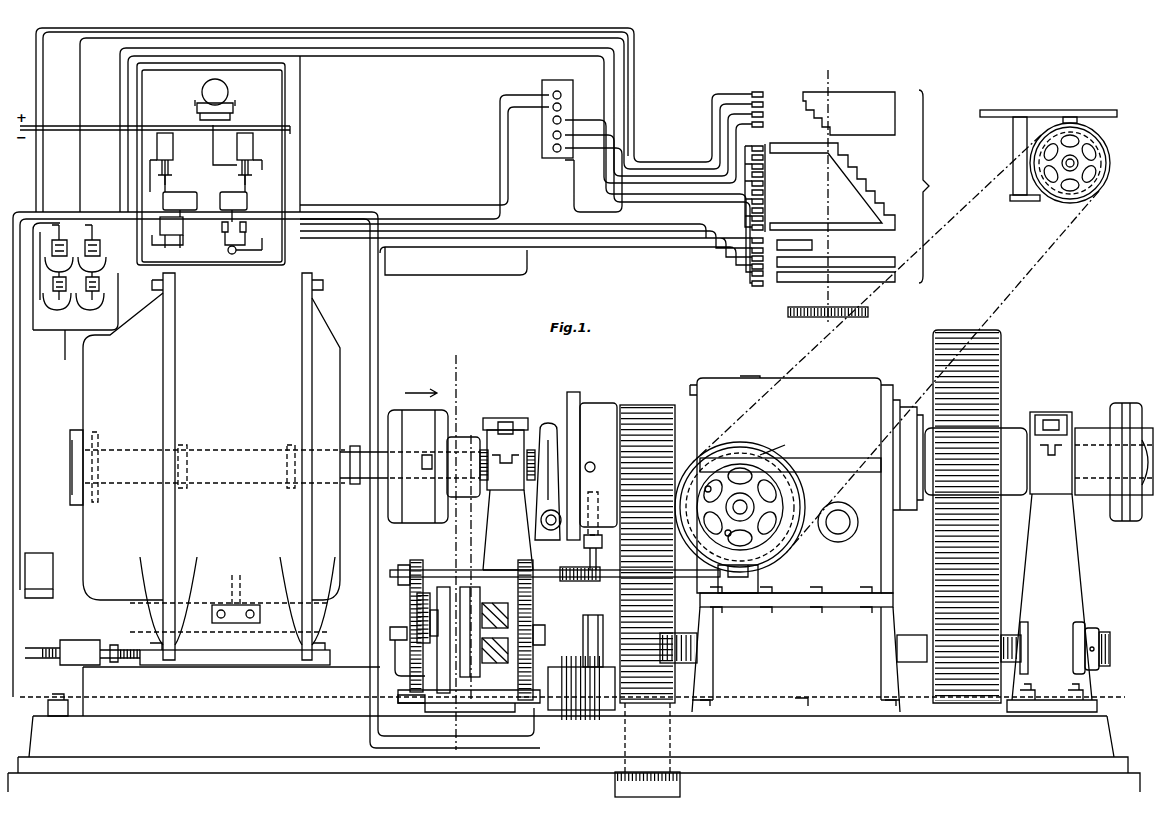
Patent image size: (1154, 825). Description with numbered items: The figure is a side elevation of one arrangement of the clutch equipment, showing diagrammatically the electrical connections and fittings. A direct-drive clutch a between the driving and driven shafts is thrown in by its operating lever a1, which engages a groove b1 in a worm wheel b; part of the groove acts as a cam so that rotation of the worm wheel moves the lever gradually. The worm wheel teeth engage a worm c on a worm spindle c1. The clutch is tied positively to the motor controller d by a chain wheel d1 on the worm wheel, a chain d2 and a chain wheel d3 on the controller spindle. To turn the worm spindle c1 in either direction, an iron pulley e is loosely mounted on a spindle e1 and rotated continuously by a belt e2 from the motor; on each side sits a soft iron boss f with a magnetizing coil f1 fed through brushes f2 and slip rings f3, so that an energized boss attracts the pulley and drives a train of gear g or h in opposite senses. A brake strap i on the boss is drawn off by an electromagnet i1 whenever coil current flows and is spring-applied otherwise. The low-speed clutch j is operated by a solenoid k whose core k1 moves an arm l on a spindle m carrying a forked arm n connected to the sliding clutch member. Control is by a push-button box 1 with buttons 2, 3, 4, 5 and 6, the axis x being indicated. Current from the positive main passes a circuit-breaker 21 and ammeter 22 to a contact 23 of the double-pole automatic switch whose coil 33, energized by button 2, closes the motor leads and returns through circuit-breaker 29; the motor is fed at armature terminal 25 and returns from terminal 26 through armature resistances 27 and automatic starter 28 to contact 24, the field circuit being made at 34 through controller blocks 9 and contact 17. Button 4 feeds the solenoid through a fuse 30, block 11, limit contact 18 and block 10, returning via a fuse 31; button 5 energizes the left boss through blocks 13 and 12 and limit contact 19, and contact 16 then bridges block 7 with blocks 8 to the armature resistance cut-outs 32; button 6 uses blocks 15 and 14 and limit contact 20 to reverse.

The push-button box 1 is at (573, 98).
The start button 2 is at (562, 91).
The stop button 3 is at (562, 104).
The low-speed clutch button 4 is at (562, 117).
The left-hand boss button 5 is at (552, 133).
The right-hand boss button 6 is at (552, 146).
The fixed contact block 7 is at (763, 95).
The fixed contact blocks 8 is at (763, 115).
The controller contact blocks 9 is at (766, 188).
The fixed contact block 10 is at (767, 240).
The fixed contact block 11 is at (749, 250).
The fixed contact block 12 is at (767, 257).
The fixed contact block 13 is at (749, 266).
The fixed contact block 14 is at (767, 273).
The fixed contact block 15 is at (749, 284).
The controller contact 16 is at (849, 113).
The controller contact 17 is at (805, 141).
The limit contact 18 is at (812, 245).
The limit contact 19 is at (895, 262).
The limit contact 20 is at (895, 277).
The circuit-breaker 21 is at (243, 155).
The ammeter 22 is at (222, 110).
The contact 23 is at (247, 245).
The contact 24 is at (224, 226).
The motor armature terminal 25 is at (250, 618).
The motor armature terminal 26 is at (221, 618).
The armature resistances 27 is at (90, 296).
The automatic starter 28 is at (167, 232).
The circuit-breaker 29 is at (172, 162).
The fuses 30 is at (233, 191).
The fuses 31 is at (180, 188).
The armature resistance cut-outs 32 is at (66, 248).
The operating coil 33 is at (232, 254).
The field circuit connection 34 is at (236, 588).
The clutch a is at (832, 378).
The operating lever a1 is at (828, 540).
The worm wheel b is at (768, 552).
The groove b1 is at (783, 441).
The worm c is at (733, 593).
The worm spindle c1 is at (690, 577).
The motor controller d is at (932, 186).
The chain wheel d1 is at (760, 450).
The chain d2 is at (943, 371).
The chain wheel d3 is at (1097, 196).
The iron pulley e is at (448, 668).
The spindle e1 is at (430, 634).
The belt e2 is at (471, 545).
The soft iron boss f is at (510, 618).
The magnetizing coil f1 is at (490, 610).
The brushes or contact pieces f2 is at (508, 660).
The slip rings f3 is at (528, 610).
The train of gear g is at (395, 625).
The train of gear h is at (530, 590).
The brake strap i is at (423, 580).
The electromagnet i1 is at (455, 678).
The low-speed clutch j is at (593, 403).
The solenoid k is at (585, 710).
The core k1 is at (603, 625).
The arm l is at (592, 480).
The spindle m is at (541, 522).
The forked arm n is at (590, 462).
The axis x is at (431, 550).